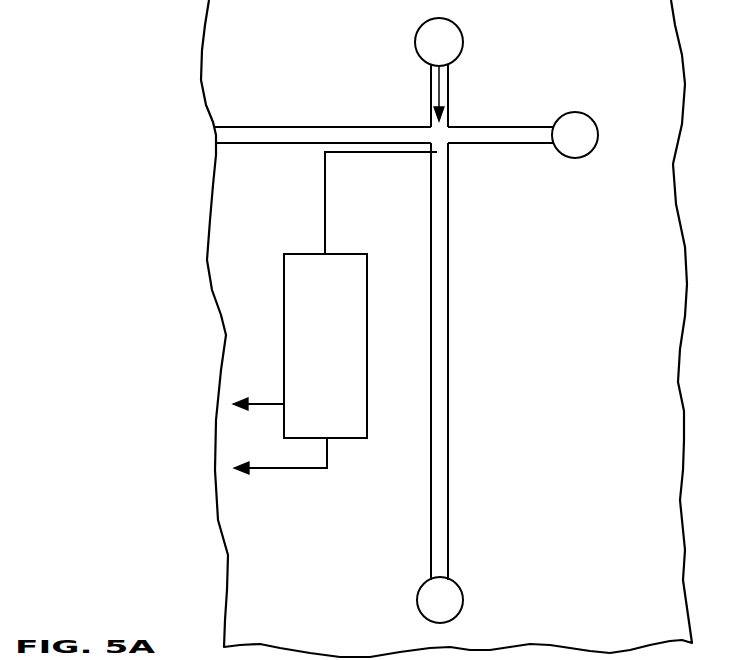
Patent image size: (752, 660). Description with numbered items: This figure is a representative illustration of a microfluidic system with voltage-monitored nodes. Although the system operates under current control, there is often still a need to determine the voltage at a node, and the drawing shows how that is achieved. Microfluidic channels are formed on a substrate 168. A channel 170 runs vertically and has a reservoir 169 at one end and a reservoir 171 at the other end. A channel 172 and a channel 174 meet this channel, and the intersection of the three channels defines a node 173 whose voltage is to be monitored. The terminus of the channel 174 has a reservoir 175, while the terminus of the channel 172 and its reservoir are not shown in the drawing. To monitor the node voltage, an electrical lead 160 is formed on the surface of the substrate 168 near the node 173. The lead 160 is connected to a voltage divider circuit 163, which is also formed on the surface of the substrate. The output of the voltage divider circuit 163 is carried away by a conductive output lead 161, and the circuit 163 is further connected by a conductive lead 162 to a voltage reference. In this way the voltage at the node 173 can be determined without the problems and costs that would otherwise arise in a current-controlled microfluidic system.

The electrical lead 160 is at (325, 187).
The conductive output lead 161 is at (259, 398).
The conductive lead 162 is at (275, 470).
The voltage divider circuit 163 is at (360, 347).
The substrate 168 is at (607, 617).
The reservoir 169 is at (449, 40).
The channel 170 is at (461, 83).
The reservoir 171 is at (430, 600).
The channel 172 is at (268, 115).
The node 173 is at (438, 134).
The channel 174 is at (532, 157).
The reservoir 175 is at (582, 124).